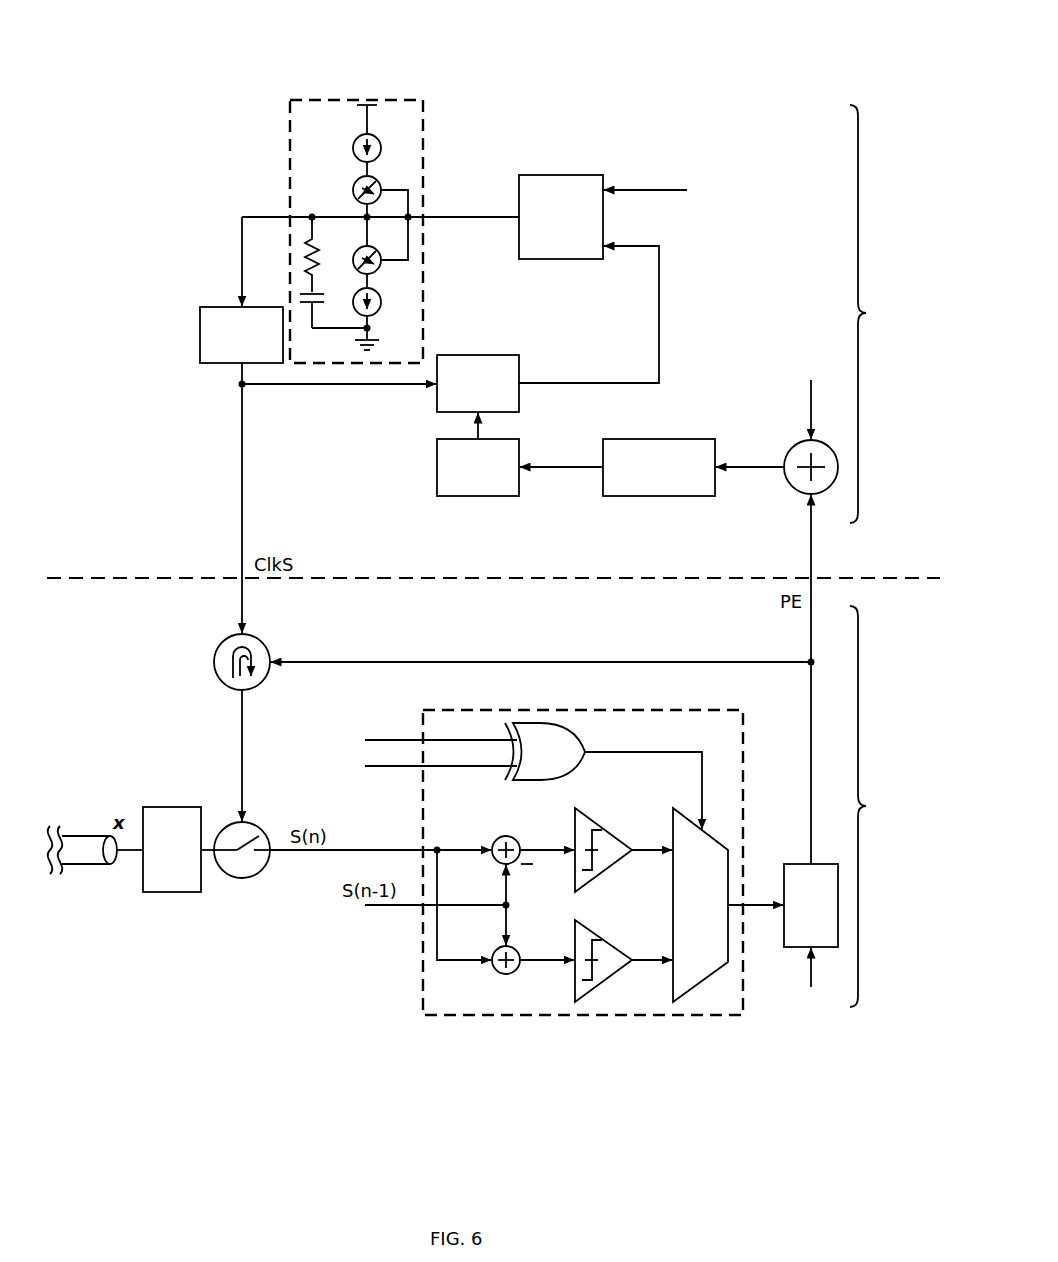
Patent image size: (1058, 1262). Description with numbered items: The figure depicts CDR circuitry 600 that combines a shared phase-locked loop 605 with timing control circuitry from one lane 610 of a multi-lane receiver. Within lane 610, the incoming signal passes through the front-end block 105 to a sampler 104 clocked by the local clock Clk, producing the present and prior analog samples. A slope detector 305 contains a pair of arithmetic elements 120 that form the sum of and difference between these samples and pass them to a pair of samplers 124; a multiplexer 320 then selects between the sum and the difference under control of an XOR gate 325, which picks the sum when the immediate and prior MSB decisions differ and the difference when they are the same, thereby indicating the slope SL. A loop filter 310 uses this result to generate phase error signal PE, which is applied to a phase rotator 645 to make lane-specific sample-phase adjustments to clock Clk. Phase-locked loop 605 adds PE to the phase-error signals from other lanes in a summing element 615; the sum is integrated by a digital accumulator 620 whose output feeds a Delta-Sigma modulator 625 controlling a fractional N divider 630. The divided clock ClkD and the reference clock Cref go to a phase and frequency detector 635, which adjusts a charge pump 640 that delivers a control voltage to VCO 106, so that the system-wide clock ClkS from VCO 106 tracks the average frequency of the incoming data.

The CDR circuitry 600 is at (170, 40).
The charge pump 640 is at (380, 231).
The VCO 106 is at (318, 425).
The phase and frequency detector 635 is at (625, 279).
The fractional N divider 630 is at (478, 383).
The Delta-Sigma modulator 625 is at (478, 454).
The digital accumulator 620 is at (617, 467).
The summing element 615 is at (787, 450).
The phase-locked loop 605 is at (899, 314).
The phase rotator 645 is at (255, 689).
The AFE and linear equalizer 105 is at (178, 849).
The sampler 104 is at (247, 878).
The slope detector 305 is at (530, 862).
The arithmetic elements 120 is at (514, 838).
The samplers 124 is at (600, 828).
The XOR gate 325 is at (489, 776).
The multiplexer 320 is at (728, 905).
The loop filter 310 is at (811, 838).
The lane 610 is at (907, 806).